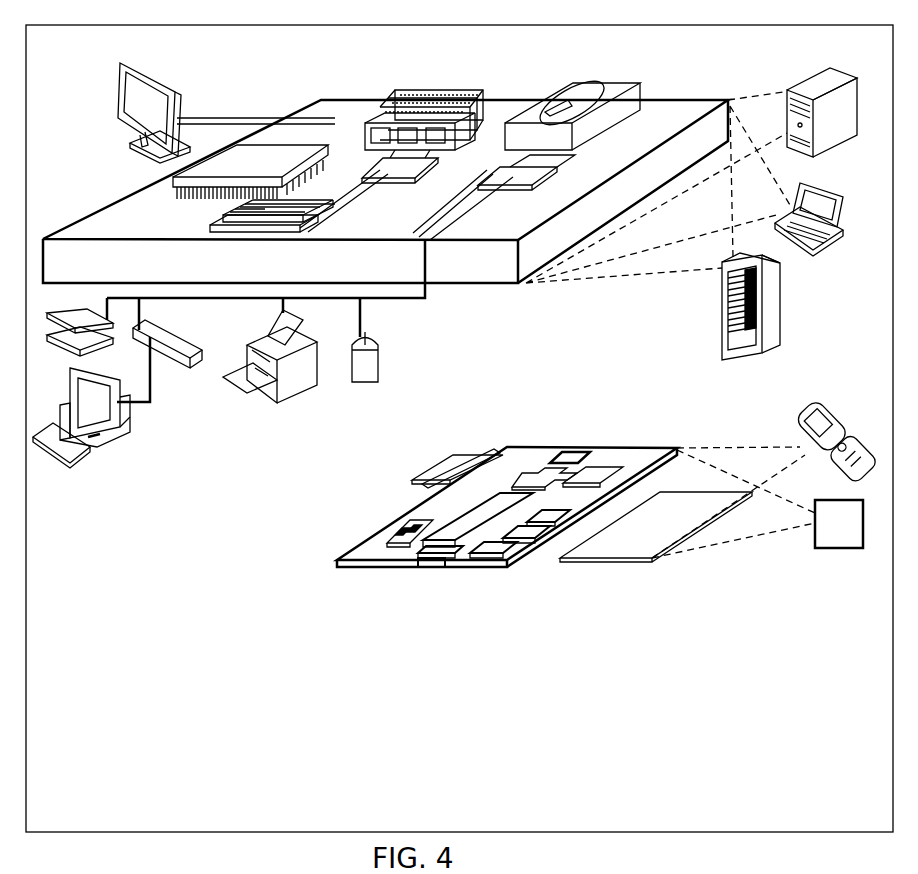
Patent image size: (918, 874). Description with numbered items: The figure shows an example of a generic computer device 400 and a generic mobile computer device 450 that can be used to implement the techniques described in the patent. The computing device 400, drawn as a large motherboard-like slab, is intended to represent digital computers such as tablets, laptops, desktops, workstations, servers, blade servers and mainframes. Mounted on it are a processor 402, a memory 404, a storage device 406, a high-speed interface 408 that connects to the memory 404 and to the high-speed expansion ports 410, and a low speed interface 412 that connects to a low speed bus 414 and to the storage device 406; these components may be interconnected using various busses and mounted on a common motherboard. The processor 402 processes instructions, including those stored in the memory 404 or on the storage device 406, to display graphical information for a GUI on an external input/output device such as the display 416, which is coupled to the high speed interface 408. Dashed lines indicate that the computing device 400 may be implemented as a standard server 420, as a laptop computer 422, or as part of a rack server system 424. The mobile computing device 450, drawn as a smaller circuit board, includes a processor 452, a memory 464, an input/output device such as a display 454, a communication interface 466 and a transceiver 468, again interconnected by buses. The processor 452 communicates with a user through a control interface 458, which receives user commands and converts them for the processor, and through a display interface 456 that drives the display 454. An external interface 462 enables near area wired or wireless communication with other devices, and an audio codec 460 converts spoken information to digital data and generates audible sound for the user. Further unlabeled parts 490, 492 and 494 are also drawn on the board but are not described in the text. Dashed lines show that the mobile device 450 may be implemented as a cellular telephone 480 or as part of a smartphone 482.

The computing device 400 is at (260, 77).
The processor 402 is at (173, 176).
The memory 404 is at (407, 90).
The storage device 406 is at (568, 83).
The high-speed interface 408 is at (384, 164).
The high-speed expansion ports 410 is at (237, 212).
The low speed interface 412 is at (517, 170).
The low speed bus 414 is at (433, 240).
The display 416 is at (124, 70).
The standard server 420 is at (780, 90).
The laptop computer 422 is at (807, 183).
The rack server system 424 is at (722, 318).
The mobile computer device 450 is at (486, 426).
The processor 452 is at (453, 550).
The display 454 is at (651, 562).
The display interface 456 is at (512, 560).
The control interface 458 is at (543, 550).
The audio codec 460 is at (550, 543).
The external interface 462 is at (433, 562).
The memory 464 is at (400, 530).
The communication interface 466 is at (543, 472).
The transceiver 468 is at (593, 472).
The cellular telephone 480 is at (840, 403).
The smartphone 482 is at (818, 500).
The chip 490 is at (570, 445).
The edge strip 492 is at (487, 455).
The plate 494 is at (440, 458).